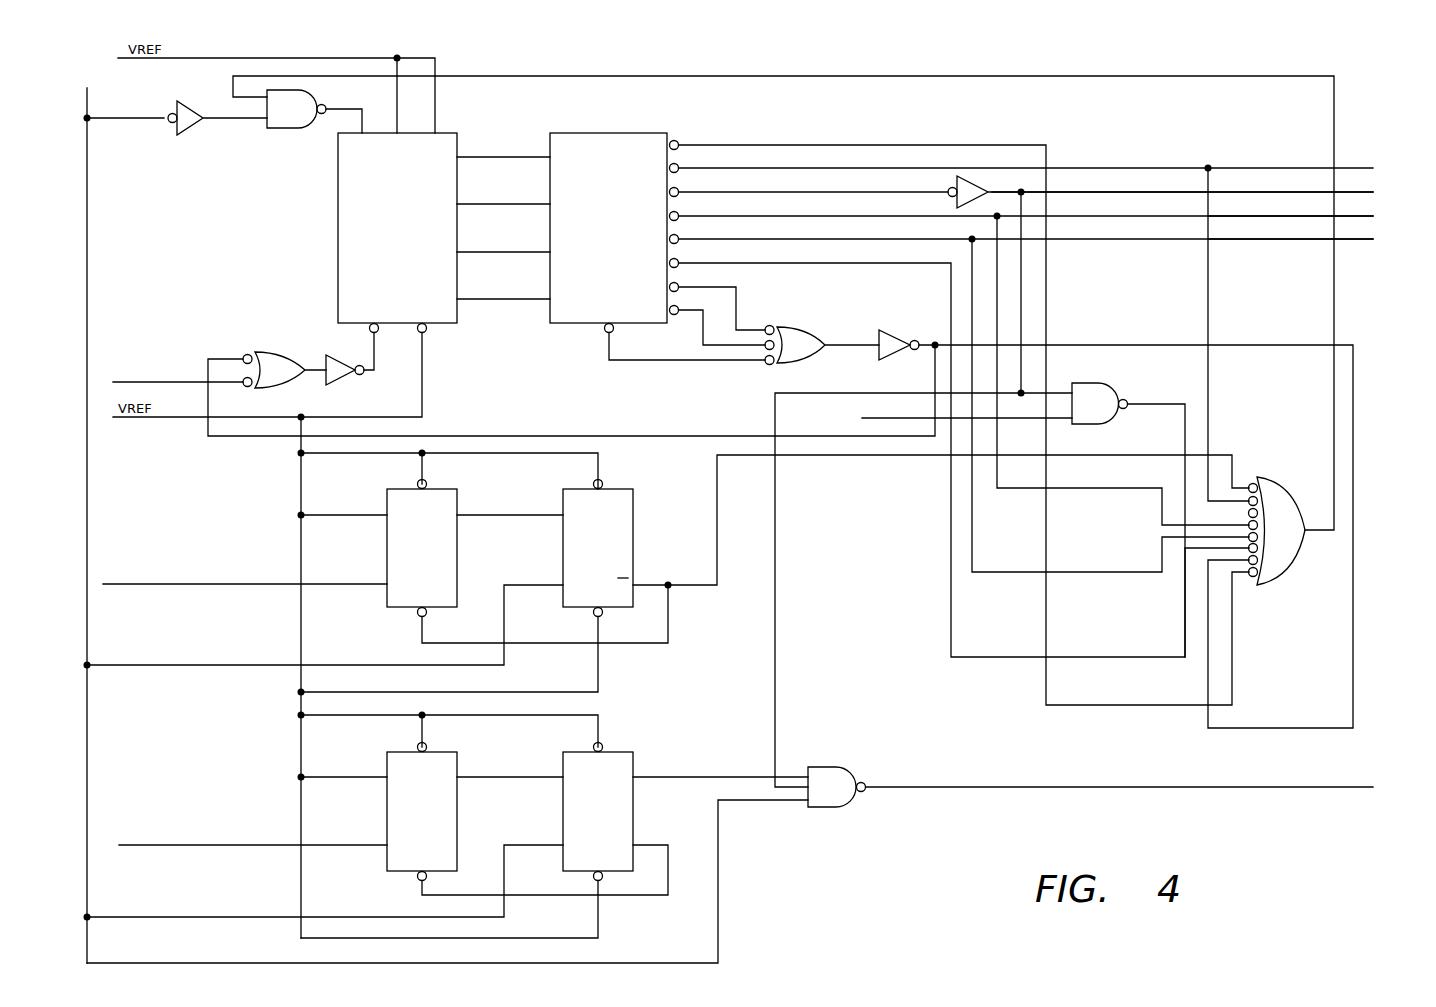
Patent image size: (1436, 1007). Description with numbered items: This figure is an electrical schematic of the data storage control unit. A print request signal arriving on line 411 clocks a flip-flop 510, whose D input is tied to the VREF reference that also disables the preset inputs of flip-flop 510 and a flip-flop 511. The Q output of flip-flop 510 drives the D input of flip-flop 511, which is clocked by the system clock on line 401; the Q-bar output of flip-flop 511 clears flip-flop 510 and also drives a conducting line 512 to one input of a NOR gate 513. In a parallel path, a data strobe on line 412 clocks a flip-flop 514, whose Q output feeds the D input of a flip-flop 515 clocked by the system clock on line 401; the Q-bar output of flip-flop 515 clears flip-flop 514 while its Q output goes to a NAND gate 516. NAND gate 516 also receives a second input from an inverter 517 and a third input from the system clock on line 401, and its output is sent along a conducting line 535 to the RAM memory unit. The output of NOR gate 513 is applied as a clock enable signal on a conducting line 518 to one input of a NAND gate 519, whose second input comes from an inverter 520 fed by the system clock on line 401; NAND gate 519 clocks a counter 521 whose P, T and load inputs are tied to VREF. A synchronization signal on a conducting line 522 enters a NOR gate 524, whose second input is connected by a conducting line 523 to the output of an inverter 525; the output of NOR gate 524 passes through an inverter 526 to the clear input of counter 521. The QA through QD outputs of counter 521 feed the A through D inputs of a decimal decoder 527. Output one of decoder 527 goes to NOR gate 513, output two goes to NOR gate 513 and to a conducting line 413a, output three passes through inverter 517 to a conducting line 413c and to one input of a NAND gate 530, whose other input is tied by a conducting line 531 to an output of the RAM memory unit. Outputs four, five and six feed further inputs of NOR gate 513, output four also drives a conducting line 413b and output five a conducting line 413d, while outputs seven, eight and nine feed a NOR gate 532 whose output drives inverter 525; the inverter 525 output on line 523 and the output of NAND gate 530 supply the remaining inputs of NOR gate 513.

The system clock line 401 is at (86, 96).
The clock enable conducting line 518 is at (235, 82).
The inverter 520 is at (192, 128).
The NAND gate 519 is at (277, 128).
The counter 521 is at (394, 231).
The decimal decoder 527 is at (615, 231).
The conducting line of channel 413 413a is at (1304, 169).
The conducting line of channel 413 413b is at (1253, 215).
The conducting line of channel 413 413c is at (1253, 191).
The conducting line of channel 413 413d is at (1254, 242).
The inverter 517 is at (951, 187).
The NOR gate 532 is at (810, 330).
The inverter 525 is at (900, 330).
The conducting line 523 is at (209, 354).
The conducting line 522 is at (145, 380).
The NOR gate 524 is at (290, 355).
The inverter 526 is at (339, 369).
The print request line 411 is at (225, 587).
The flip-flop 510 is at (439, 552).
The flip-flop 511 is at (617, 552).
The conducting line 512 is at (717, 548).
The flip-flop 514 is at (439, 815).
The flip-flop 515 is at (617, 815).
The data strobe line 412 is at (198, 815).
The conducting line 531 is at (871, 404).
The NAND gate 530 is at (1102, 395).
The NOR gate 513 is at (1283, 555).
The NAND gate 516 is at (838, 804).
The conducting line 535 is at (1338, 787).